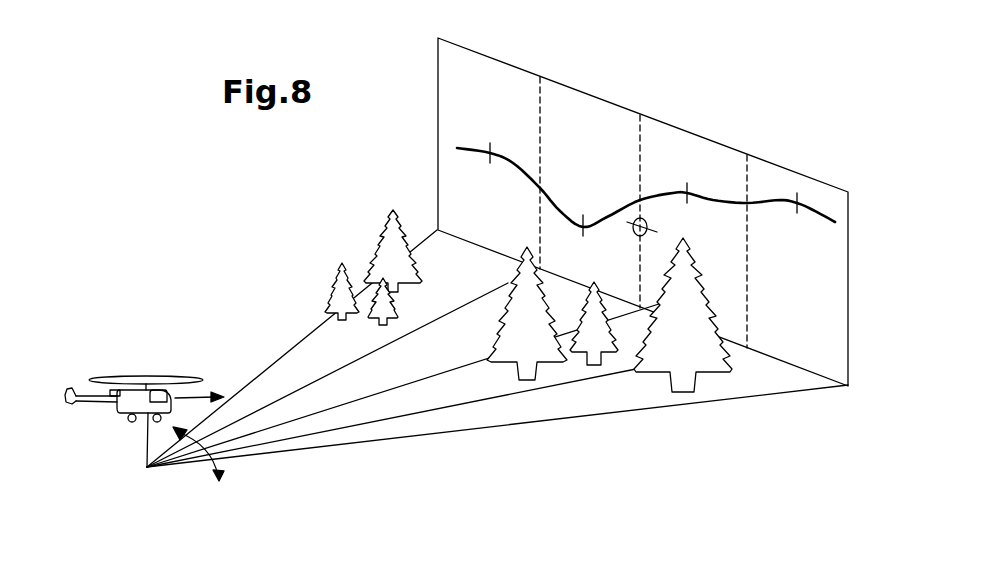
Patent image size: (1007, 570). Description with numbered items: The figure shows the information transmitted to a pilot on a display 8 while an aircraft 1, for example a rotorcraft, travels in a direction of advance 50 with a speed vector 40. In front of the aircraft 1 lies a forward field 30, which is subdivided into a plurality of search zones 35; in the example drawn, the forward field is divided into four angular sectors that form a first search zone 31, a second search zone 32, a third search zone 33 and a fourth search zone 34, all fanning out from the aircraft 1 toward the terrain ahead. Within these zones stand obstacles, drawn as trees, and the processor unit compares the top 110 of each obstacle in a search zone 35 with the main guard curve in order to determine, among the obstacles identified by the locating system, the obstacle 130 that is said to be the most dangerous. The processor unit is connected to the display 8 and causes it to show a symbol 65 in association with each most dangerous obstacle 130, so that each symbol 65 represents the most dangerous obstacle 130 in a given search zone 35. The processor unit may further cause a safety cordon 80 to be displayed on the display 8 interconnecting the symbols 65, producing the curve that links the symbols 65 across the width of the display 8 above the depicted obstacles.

The aircraft 1 is at (118, 408).
The display 8 is at (452, 82).
The forward field 30 is at (318, 350).
The first search zone 31 is at (270, 380).
The second search zone 32 is at (273, 416).
The third search zone 33 is at (347, 423).
The fourth search zone 34 is at (413, 427).
The search zones 35 is at (198, 454).
The speed vector 40 is at (199, 397).
The direction of advance 50 is at (195, 384).
The symbol 65 is at (490, 152).
The safety cordon 80 is at (813, 213).
The top of obstacle 110 is at (380, 278).
The most dangerous obstacle 130 is at (527, 240).